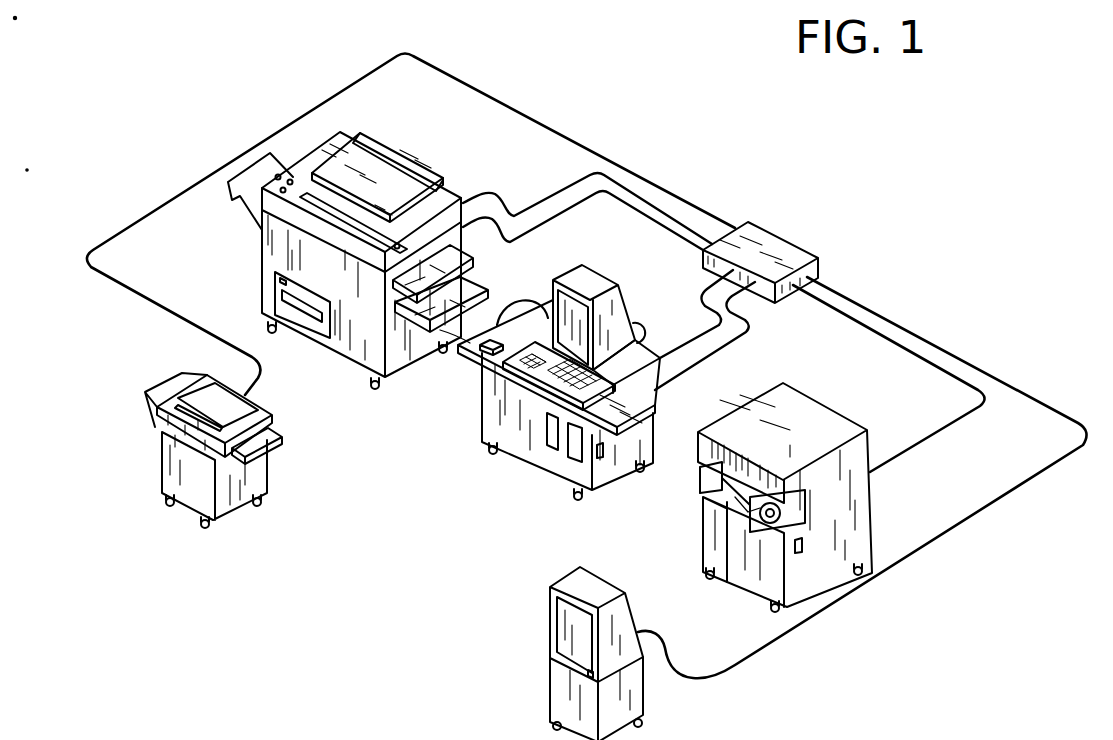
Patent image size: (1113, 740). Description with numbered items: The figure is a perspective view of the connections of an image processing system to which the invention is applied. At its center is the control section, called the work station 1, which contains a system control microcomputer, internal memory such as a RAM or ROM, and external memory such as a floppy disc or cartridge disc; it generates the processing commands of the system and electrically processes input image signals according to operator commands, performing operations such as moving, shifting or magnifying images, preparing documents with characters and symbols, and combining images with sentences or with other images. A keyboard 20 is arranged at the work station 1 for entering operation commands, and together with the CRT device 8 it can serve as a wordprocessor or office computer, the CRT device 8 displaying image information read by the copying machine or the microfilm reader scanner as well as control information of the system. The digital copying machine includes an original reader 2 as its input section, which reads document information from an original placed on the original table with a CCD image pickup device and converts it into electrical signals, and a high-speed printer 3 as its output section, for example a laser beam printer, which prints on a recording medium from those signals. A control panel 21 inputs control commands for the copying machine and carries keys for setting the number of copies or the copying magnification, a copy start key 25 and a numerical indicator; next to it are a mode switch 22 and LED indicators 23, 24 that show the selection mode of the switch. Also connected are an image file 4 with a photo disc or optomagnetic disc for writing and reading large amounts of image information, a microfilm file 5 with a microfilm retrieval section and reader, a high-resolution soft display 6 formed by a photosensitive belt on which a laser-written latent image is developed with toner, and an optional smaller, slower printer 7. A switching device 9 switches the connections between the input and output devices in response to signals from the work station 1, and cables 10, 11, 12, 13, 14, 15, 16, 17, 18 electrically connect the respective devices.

The work station 1 is at (490, 427).
The original reader 2 is at (330, 147).
The high-speed printer 3 is at (272, 252).
The image file 4 is at (320, 347).
The microfilm file 5 is at (837, 422).
The soft display 6 is at (570, 582).
The printer 7 is at (170, 473).
The CRT device 8 is at (568, 300).
The switching device 9 is at (787, 247).
The cable 10 is at (560, 133).
The cable 11 is at (568, 184).
The cable 12 is at (578, 205).
The cable 13 is at (712, 307).
The cable 14 is at (725, 350).
The cable 15 is at (893, 345).
The cable 16 is at (885, 315).
The cable 17 is at (527, 292).
The cable 18 is at (640, 323).
The keyboard 20 is at (612, 392).
The control panel 21 is at (325, 208).
The mode switch 22 is at (274, 173).
The LED indicator 23 is at (290, 179).
The LED indicator 24 is at (233, 180).
The copy start key 25 is at (375, 238).